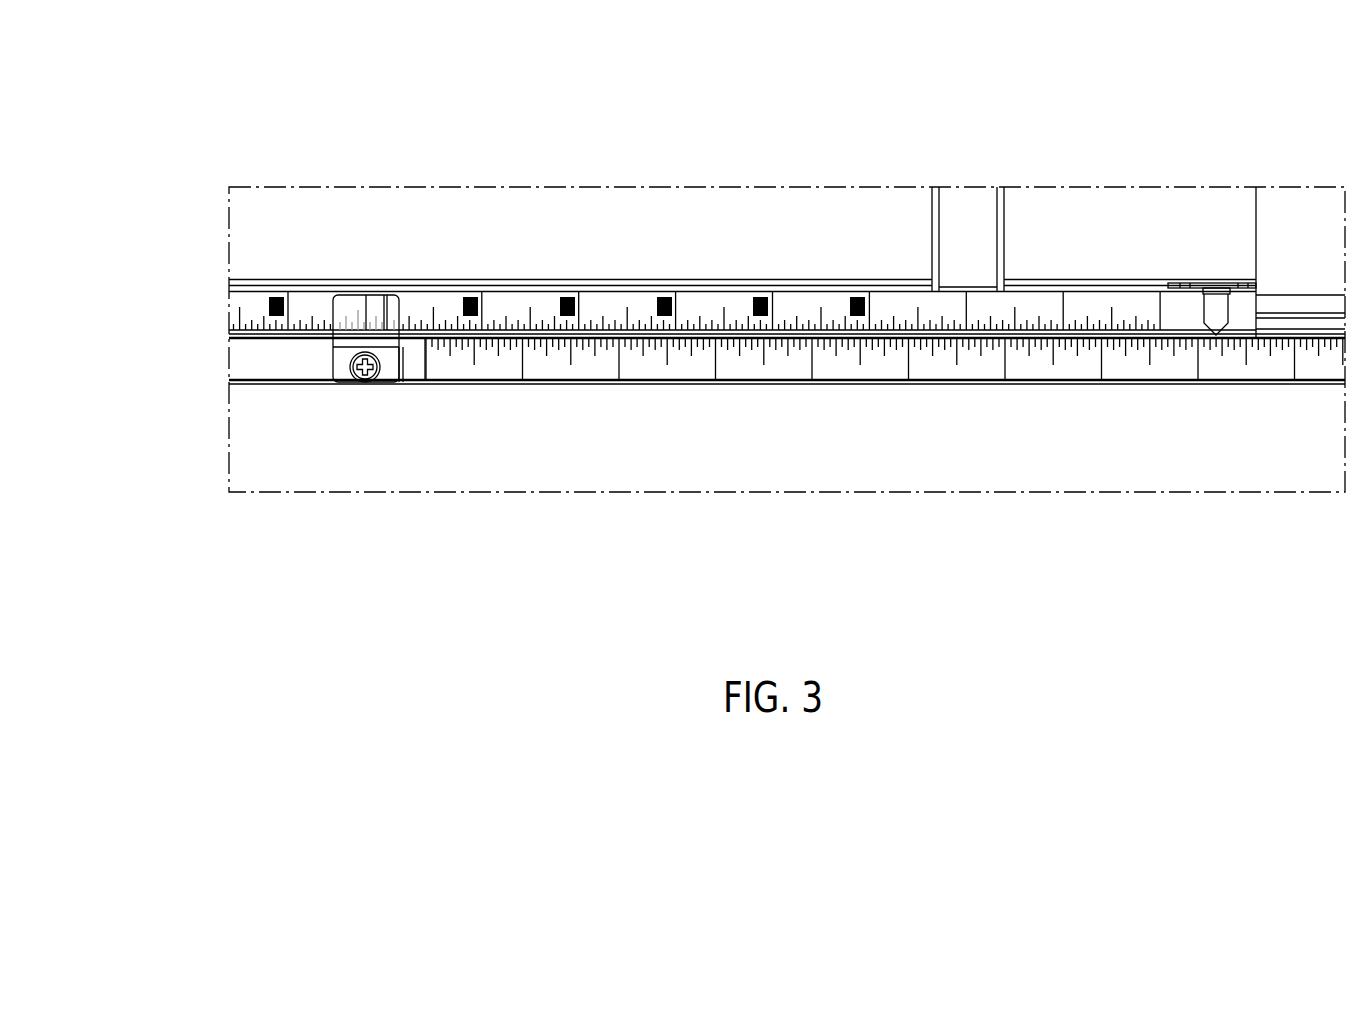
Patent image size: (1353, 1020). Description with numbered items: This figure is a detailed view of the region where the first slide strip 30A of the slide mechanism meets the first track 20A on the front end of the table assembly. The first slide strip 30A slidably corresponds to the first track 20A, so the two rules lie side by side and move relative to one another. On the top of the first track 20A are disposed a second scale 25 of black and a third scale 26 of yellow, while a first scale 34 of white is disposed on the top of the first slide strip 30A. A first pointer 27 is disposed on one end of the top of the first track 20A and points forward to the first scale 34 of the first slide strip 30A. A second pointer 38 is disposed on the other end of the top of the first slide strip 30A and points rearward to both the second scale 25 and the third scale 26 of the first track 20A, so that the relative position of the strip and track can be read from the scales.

The first track 20A is at (249, 294).
The first slide strip 30A is at (252, 362).
The second pointer 38 is at (352, 303).
The third scale 26 is at (455, 302).
The second scale 25 is at (520, 302).
The first pointer 27 is at (1220, 303).
The first scale 34 is at (1175, 370).